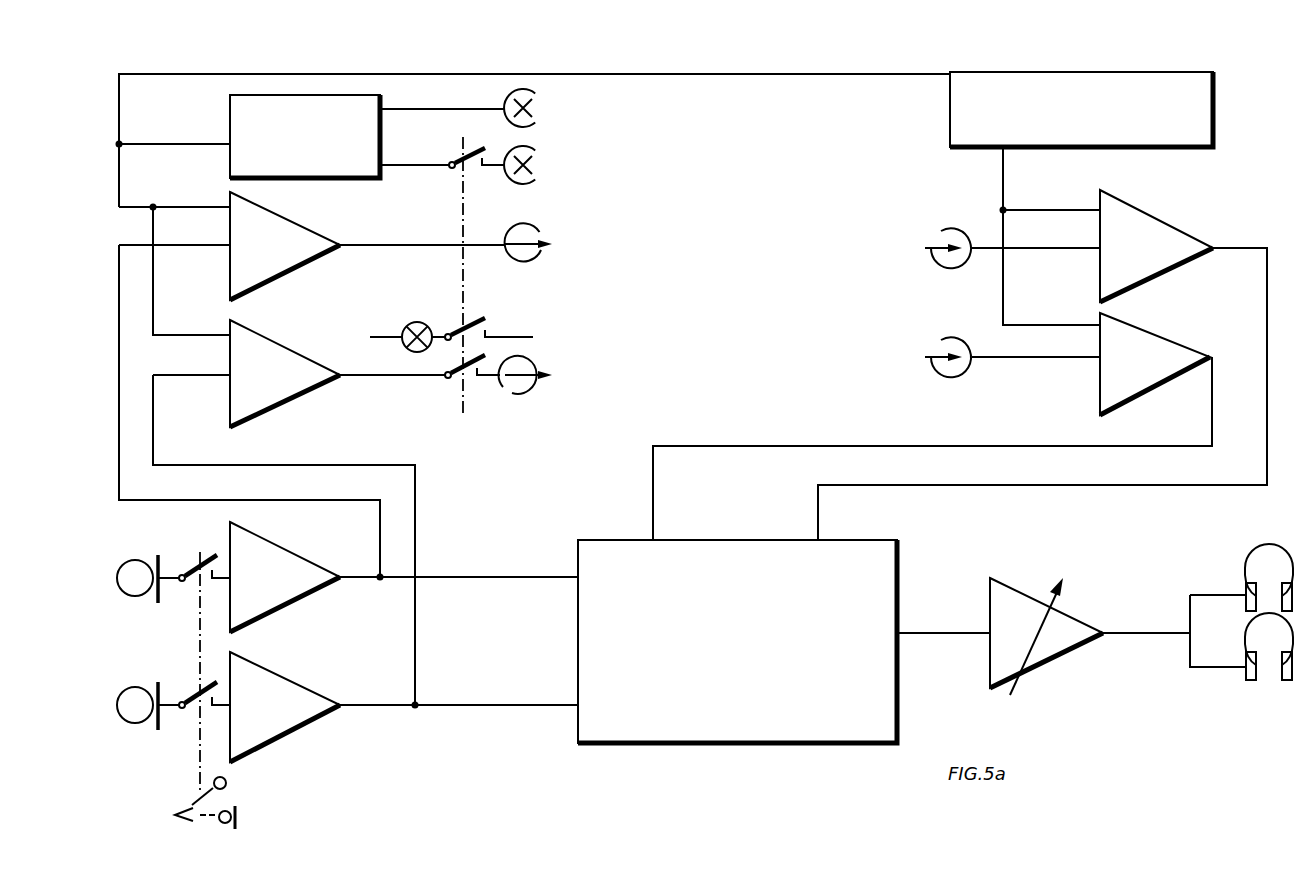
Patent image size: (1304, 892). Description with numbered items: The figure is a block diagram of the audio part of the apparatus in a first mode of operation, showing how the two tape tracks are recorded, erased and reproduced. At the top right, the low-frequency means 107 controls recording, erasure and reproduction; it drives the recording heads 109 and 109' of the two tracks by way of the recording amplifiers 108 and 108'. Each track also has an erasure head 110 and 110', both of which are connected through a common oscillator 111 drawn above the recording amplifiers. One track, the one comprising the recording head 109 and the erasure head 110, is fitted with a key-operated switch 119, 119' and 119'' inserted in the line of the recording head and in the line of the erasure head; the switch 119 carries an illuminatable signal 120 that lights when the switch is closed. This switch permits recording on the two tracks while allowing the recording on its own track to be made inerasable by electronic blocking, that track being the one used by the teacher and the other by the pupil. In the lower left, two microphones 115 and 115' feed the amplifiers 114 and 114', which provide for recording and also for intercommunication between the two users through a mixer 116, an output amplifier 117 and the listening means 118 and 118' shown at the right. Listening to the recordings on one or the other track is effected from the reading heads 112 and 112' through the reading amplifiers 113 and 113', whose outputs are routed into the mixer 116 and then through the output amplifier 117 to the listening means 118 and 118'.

The low-frequency means 107 is at (1118, 126).
The recording amplifier 108 is at (285, 373).
The recording amplifier 108' is at (285, 246).
The recording head 109 is at (525, 392).
The recording head 109' is at (543, 235).
The erasure head 110 is at (549, 166).
The erasure head 110' is at (551, 109).
The oscillator 111 is at (313, 150).
The reading head 112 is at (932, 354).
The reading head 112' is at (932, 239).
The reading amplifier 113 is at (1155, 364).
The reading amplifier 113' is at (1156, 246).
The amplifier 114 is at (285, 707).
The amplifier 114' is at (285, 577).
The microphone 115 is at (173, 714).
The microphone 115' is at (173, 587).
The mixer 116 is at (736, 629).
The output amplifier 117 is at (1026, 644).
The listening means 118 is at (1244, 656).
The listening means 118' is at (1249, 587).
The key-operated switch 119 is at (477, 311).
The key-operated switch 119' is at (431, 363).
The key-operated switch 119'' is at (459, 148).
The illuminatable signal 120 is at (421, 322).